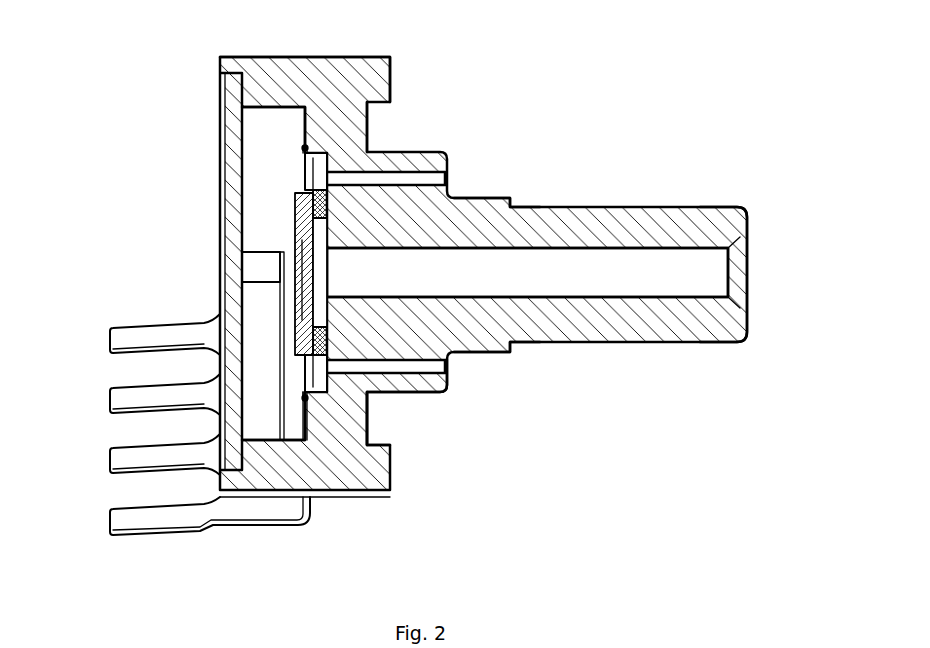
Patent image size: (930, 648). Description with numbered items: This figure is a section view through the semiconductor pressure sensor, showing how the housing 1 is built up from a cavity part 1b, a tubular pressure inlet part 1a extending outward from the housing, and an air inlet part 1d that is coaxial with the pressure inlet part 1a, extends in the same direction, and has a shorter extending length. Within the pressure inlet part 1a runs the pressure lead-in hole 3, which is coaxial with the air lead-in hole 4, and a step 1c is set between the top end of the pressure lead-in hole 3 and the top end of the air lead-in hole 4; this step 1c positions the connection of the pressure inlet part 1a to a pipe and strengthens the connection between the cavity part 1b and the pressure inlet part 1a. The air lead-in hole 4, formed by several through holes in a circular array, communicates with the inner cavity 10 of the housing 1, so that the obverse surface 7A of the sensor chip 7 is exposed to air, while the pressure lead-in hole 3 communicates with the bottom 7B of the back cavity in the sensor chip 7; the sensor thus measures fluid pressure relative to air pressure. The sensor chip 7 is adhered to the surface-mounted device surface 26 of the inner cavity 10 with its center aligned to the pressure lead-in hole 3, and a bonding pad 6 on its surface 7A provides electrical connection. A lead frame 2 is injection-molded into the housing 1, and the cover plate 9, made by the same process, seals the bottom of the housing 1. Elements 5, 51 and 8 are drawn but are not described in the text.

The housing 1 is at (425, 228).
The pressure inlet part 1a is at (730, 215).
The cavity part 1b is at (262, 72).
The step 1c is at (508, 198).
The air inlet part 1d is at (447, 395).
The lead frame 2 is at (128, 522).
The pressure lead-in hole 3 is at (710, 272).
The air lead-in hole 4 is at (443, 368).
The contact protrusion 5 is at (312, 150).
The contact point 51 is at (305, 148).
The bonding pad 6 is at (308, 402).
The sensor chip 7 is at (239, 391).
The surface of the sensor chip 7A is at (298, 360).
The bottom of the back cavity 7B is at (320, 340).
The resistor substrate 8 is at (232, 137).
The cover plate 9 is at (262, 420).
The inner cavity 10 is at (272, 172).
The surface-mounted device surface 26 is at (278, 265).